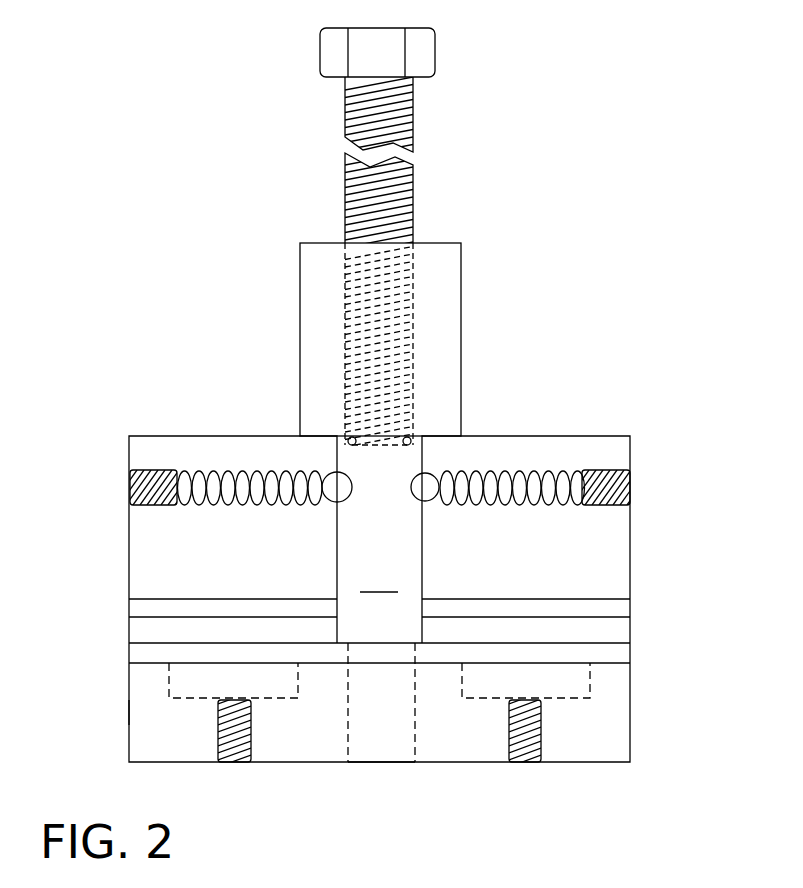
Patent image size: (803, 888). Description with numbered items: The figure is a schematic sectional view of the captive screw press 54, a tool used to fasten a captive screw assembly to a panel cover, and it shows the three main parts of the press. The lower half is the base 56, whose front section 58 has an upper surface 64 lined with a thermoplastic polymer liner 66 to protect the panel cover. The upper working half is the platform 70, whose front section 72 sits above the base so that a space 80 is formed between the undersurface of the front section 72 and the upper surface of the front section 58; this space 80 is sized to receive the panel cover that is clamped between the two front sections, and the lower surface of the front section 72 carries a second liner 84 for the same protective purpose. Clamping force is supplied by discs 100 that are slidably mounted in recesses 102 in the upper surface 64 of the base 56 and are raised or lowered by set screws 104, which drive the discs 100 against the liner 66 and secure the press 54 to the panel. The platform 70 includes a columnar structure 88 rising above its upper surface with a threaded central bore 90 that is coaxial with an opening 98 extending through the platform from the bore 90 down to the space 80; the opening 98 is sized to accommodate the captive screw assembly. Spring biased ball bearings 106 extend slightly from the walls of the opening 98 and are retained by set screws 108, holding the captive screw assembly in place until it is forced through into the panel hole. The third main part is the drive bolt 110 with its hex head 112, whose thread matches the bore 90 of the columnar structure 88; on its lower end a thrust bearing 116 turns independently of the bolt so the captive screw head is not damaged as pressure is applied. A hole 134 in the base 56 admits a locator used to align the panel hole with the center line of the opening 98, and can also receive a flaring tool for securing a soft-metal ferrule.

The captive screw press 54 is at (417, 345).
The base 56 is at (632, 712).
The front section of the base 58 is at (130, 712).
The upper surface of the front section of the base 64 is at (155, 663).
The thermoplastic polymer liner 66 is at (615, 653).
The platform 70 is at (632, 522).
The front section of the platform 72 is at (601, 546).
The space 80 is at (615, 631).
The thermoplastic polymer liner 84 is at (620, 608).
The columnar structure 88 is at (462, 318).
The threaded central bore 90 is at (344, 355).
The opening 98 is at (379, 577).
The discs 100 is at (280, 685).
The recesses 102 is at (168, 688).
The set screws 104 is at (220, 737).
The spring biased ball bearings 106 is at (332, 477).
The set screws 108 is at (130, 495).
The drive bolt 110 is at (451, 127).
The hex head 112 is at (436, 43).
The thrust bearing 116 is at (412, 437).
The hole 134 is at (383, 737).